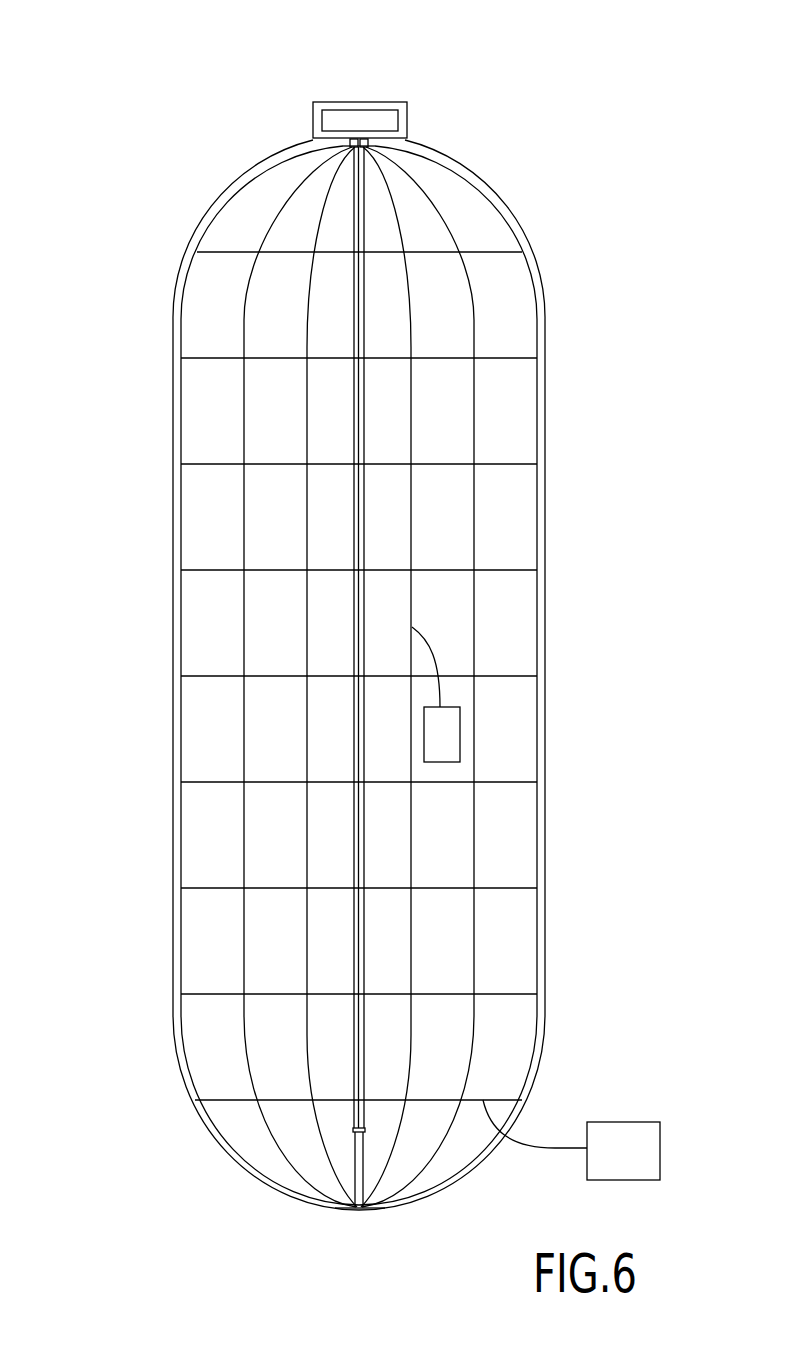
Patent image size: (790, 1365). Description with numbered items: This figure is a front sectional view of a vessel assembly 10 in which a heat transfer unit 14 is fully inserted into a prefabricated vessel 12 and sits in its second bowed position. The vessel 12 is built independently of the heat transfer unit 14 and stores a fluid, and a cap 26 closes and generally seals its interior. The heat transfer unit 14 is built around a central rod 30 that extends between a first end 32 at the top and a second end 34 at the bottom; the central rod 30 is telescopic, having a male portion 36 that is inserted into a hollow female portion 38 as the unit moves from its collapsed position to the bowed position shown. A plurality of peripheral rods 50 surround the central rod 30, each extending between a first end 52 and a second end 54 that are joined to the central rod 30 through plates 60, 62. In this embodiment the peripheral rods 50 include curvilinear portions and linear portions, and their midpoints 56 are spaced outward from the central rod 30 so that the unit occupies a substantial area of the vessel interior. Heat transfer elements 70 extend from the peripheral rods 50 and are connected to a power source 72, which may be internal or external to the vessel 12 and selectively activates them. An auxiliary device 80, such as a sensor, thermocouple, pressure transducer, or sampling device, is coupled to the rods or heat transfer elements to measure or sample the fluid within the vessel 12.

The vessel assembly 10 is at (386, 637).
The prefabricated vessel 12 is at (152, 280).
The heat transfer unit 14 is at (478, 188).
The cap 26 is at (320, 118).
The central rod 30 is at (367, 320).
The first end 32 is at (362, 138).
The second end 34 is at (358, 1213).
The male portion 36 is at (357, 1152).
The female portion 38 is at (365, 937).
The peripheral rods 50 is at (480, 533).
The first end 52 is at (405, 142).
The second end 54 is at (385, 1210).
The midpoints 56 is at (475, 618).
The plate 60 is at (333, 143).
The plate 62 is at (333, 1210).
The heat transfer elements 70 is at (213, 362).
The power source 72 is at (638, 1167).
The auxiliary device 80 is at (462, 733).